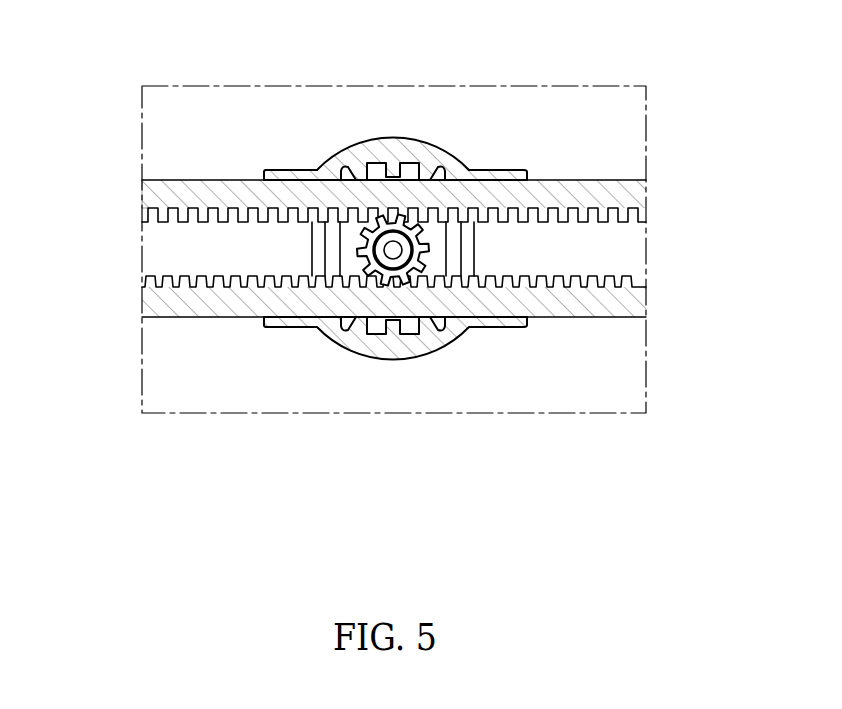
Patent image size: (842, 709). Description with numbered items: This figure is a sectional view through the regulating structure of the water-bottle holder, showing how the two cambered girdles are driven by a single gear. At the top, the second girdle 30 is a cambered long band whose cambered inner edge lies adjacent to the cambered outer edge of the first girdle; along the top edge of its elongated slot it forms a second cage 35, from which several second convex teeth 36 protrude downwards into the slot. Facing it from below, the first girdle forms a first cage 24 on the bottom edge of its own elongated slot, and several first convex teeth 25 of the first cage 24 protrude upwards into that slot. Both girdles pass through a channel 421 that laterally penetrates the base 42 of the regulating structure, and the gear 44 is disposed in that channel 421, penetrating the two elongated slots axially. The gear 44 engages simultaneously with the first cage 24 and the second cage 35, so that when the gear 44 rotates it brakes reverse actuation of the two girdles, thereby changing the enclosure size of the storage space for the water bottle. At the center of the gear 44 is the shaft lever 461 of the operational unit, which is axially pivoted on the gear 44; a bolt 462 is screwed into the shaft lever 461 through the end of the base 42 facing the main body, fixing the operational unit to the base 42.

The first cage 24 is at (193, 275).
The first convex teeth 25 is at (233, 287).
The second girdle 30 is at (593, 185).
The second cage 35 is at (192, 207).
The second convex teeth 36 is at (218, 208).
The base 42 is at (416, 152).
The channel 421 is at (312, 170).
The gear 44 is at (423, 265).
The shaft lever 461 is at (388, 262).
The bolt 462 is at (401, 250).